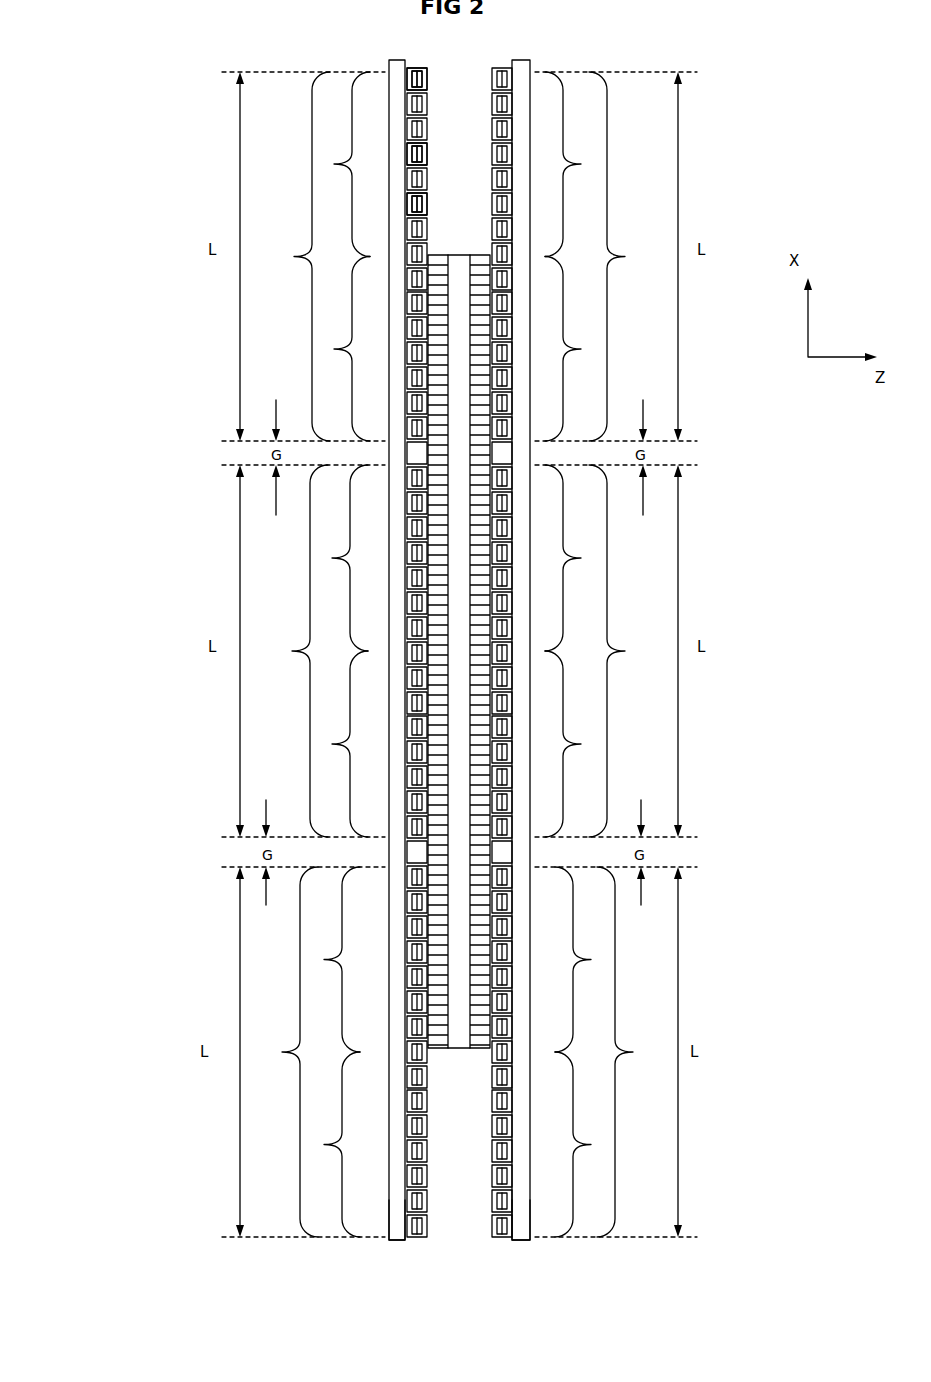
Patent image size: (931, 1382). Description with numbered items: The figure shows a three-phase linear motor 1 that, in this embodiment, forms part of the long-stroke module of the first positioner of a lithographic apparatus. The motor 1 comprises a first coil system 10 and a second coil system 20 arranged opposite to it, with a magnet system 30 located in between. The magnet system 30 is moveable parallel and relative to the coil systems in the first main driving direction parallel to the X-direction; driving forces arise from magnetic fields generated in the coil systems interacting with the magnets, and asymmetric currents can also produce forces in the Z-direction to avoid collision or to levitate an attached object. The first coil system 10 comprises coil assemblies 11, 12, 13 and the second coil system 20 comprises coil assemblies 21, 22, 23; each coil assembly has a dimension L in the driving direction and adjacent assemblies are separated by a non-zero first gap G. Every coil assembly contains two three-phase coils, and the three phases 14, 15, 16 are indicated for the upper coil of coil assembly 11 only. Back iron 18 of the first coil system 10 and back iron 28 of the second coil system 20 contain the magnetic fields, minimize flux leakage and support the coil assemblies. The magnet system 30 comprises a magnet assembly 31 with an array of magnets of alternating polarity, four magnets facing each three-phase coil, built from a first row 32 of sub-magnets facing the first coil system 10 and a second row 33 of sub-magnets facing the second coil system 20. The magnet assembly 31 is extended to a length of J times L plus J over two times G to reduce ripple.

The three-phase linear motor 1 is at (152, 164).
The first coil system 10 is at (384, 70).
The coil assembly 11 is at (371, 242).
The coil assembly 12 is at (348, 651).
The coil assembly 13 is at (344, 1051).
The phase 14 is at (428, 89).
The phase 15 is at (428, 150).
The phase 16 is at (428, 212).
The back iron 18 is at (400, 1203).
The second coil system 20 is at (538, 66).
The coil assembly 21 is at (574, 254).
The coil assembly 22 is at (574, 651).
The coil assembly 23 is at (576, 1051).
The back iron 28 is at (518, 1200).
The magnet system 30 is at (459, 678).
The magnet assembly 31 is at (460, 1046).
The first row of sub-magnets 32 is at (438, 1065).
The second side flow channel 33 is at (480, 1065).